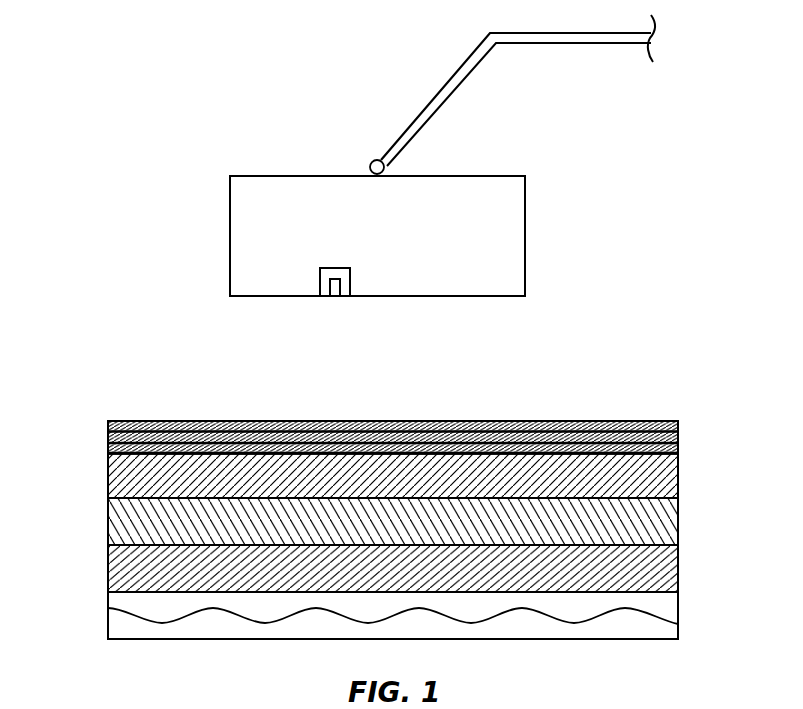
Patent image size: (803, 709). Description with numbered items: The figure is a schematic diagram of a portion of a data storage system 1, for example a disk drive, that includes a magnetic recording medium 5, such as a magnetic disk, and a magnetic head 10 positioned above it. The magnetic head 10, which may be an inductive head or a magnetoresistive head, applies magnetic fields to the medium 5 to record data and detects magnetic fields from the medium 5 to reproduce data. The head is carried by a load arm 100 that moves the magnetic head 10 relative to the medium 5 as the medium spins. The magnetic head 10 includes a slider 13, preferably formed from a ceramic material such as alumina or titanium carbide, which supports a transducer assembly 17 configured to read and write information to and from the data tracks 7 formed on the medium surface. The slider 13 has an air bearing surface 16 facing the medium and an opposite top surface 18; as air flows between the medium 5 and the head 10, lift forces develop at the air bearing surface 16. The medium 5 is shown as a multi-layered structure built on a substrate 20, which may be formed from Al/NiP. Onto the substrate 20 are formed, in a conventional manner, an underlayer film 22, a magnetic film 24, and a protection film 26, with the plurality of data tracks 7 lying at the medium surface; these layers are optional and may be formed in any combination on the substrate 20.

The data storage system 1 is at (202, 104).
The magnetic recording medium 5 is at (690, 465).
The data tracks 7 is at (118, 421).
The magnetic head 10 is at (502, 175).
The slider 13 is at (527, 245).
The air bearing surface 16 is at (416, 298).
The transducer assembly 17 is at (335, 298).
The top surface 18 is at (421, 175).
The substrate 20 is at (108, 620).
The underlayer film 22 is at (108, 570).
The magnetic film 24 is at (108, 523).
The protection film 26 is at (108, 472).
The load arm 100 is at (513, 30).